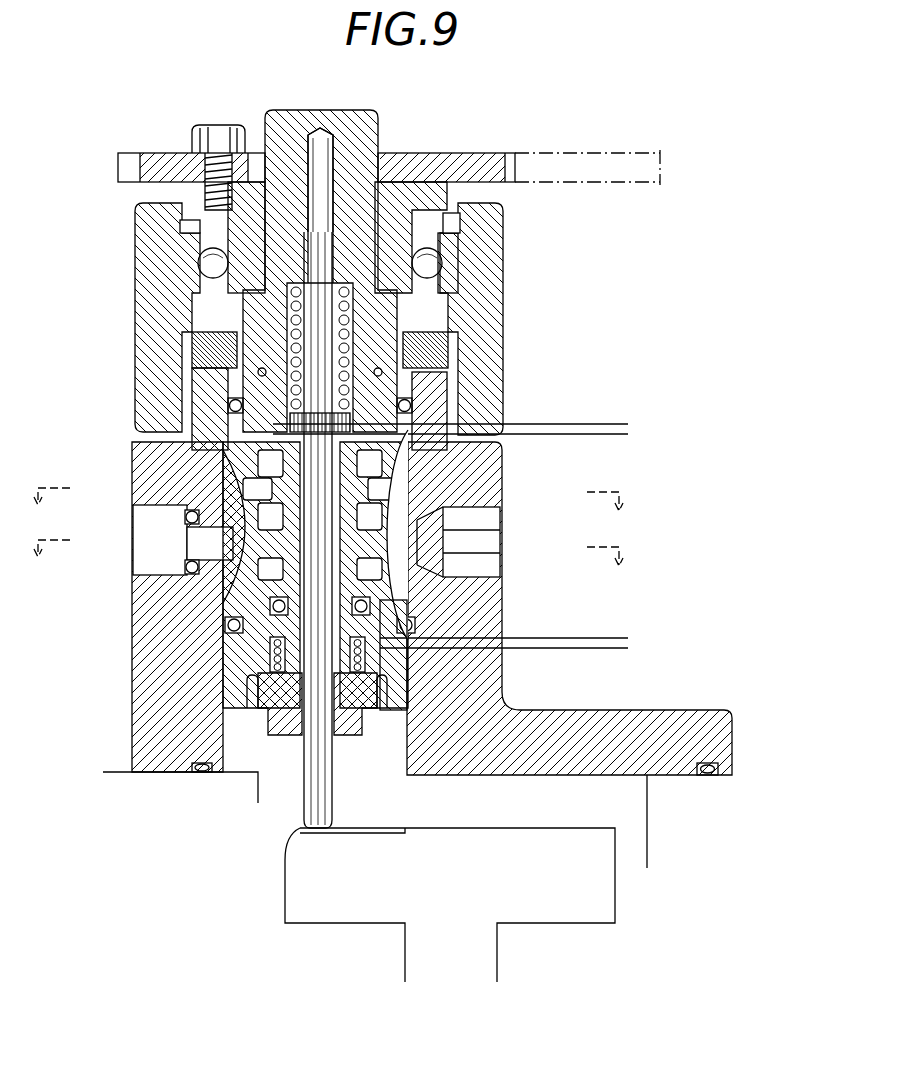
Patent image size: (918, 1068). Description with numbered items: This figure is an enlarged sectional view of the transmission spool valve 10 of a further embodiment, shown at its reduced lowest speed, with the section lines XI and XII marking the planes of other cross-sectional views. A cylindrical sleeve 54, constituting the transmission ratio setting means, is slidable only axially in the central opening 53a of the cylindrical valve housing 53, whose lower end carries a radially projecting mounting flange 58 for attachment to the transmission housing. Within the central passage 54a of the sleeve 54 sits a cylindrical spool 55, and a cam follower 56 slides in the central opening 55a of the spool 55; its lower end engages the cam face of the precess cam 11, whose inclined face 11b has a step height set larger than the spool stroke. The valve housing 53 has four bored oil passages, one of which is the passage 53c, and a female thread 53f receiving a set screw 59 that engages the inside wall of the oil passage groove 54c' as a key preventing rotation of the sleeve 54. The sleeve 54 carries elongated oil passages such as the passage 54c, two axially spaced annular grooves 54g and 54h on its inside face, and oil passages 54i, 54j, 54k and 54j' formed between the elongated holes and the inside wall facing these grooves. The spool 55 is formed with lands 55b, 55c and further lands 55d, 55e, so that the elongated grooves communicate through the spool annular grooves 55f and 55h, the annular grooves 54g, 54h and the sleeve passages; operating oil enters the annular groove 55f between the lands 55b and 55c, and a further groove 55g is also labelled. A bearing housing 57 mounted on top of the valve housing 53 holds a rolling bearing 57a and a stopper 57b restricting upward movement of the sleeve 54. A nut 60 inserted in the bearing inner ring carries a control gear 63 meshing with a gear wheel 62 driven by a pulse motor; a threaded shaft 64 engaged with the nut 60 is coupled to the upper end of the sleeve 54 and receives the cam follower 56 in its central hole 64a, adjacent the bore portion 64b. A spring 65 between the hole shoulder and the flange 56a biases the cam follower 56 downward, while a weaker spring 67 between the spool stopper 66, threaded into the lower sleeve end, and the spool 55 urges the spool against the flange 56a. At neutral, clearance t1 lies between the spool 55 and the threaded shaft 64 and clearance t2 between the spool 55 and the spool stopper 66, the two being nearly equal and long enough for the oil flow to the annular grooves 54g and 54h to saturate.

The transmission spool valve 10 is at (540, 134).
The precess cam 11 is at (292, 897).
The inclined face 11b is at (352, 827).
The valve housing 53 is at (135, 463).
The central opening 53a is at (398, 768).
The oil passage 53c is at (437, 543).
The female thread 53f is at (150, 505).
The sleeve 54 is at (193, 707).
The central passage 54a is at (273, 577).
The elongated oil passage 54c is at (481, 523).
The oil passage groove 54c' is at (176, 490).
The annular groove 54g is at (267, 493).
The annular groove 54h is at (258, 537).
The oil passage 54i is at (400, 545).
The oil passage 54j is at (425, 535).
The oil passage 54j' is at (162, 409).
The oil passage 54k is at (383, 575).
The spool 55 is at (193, 661).
The central opening 55a is at (253, 463).
The land 55b is at (447, 488).
The land 55c is at (390, 547).
The land 55d is at (453, 443).
The land 55e is at (380, 575).
The annular groove 55f is at (400, 518).
The cylinder passage 55g is at (390, 462).
The annular groove 55h is at (387, 573).
The cam follower 56 is at (303, 812).
The flange 56a is at (443, 387).
The bearing housing 57 is at (135, 312).
The rolling bearing 57a is at (198, 263).
The stopper 57b is at (192, 345).
The mounting flange 58 is at (660, 720).
The set screw 59 is at (140, 556).
The nut 60 is at (413, 193).
The gear wheel 62 is at (612, 152).
The control gear 63 is at (455, 153).
The threaded shaft 64 is at (360, 125).
The central hole 64a is at (313, 155).
The cap block bore 64b is at (380, 308).
The spring 65 is at (400, 340).
The spool stopper 66 is at (345, 725).
The spring 67 is at (405, 672).
The clearance t1 is at (622, 442).
The clearance t2 is at (622, 656).
The section line XI is at (334, 566).
The section line XII is at (337, 512).